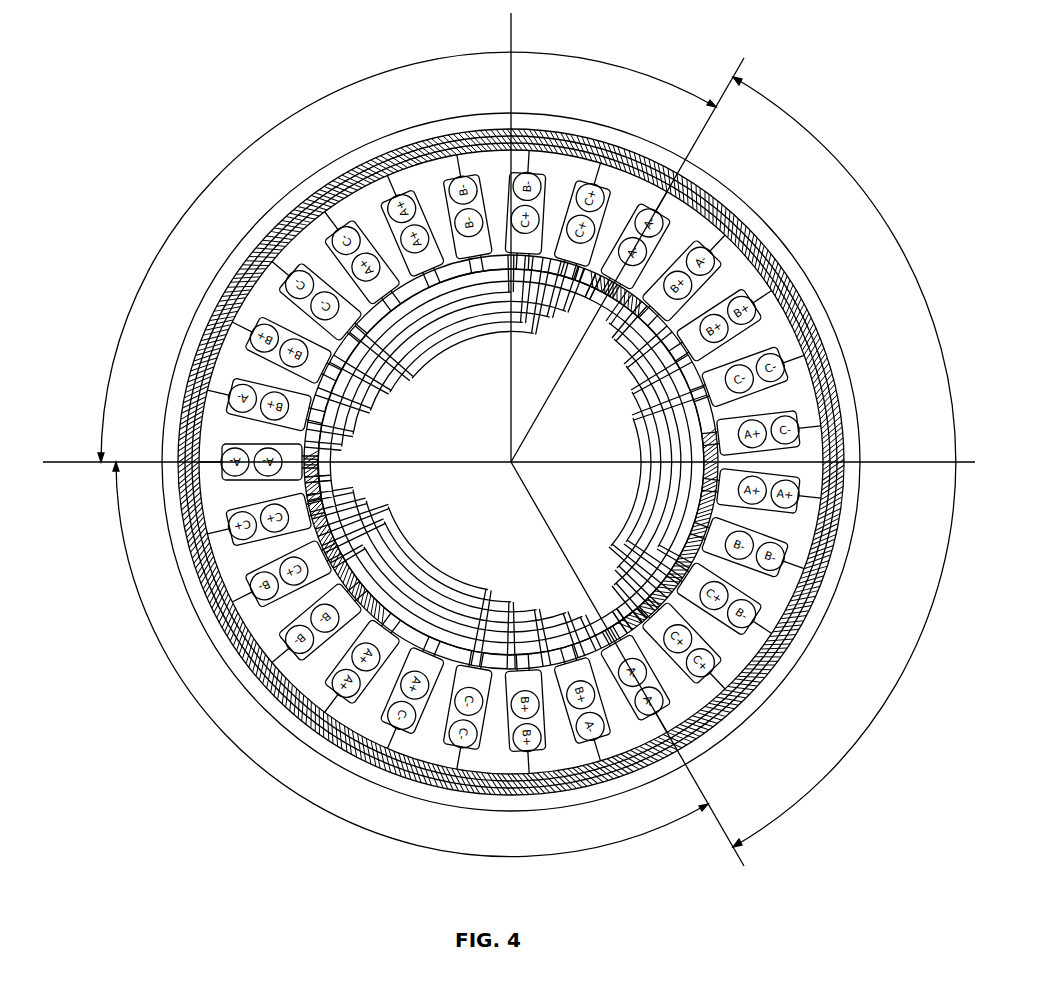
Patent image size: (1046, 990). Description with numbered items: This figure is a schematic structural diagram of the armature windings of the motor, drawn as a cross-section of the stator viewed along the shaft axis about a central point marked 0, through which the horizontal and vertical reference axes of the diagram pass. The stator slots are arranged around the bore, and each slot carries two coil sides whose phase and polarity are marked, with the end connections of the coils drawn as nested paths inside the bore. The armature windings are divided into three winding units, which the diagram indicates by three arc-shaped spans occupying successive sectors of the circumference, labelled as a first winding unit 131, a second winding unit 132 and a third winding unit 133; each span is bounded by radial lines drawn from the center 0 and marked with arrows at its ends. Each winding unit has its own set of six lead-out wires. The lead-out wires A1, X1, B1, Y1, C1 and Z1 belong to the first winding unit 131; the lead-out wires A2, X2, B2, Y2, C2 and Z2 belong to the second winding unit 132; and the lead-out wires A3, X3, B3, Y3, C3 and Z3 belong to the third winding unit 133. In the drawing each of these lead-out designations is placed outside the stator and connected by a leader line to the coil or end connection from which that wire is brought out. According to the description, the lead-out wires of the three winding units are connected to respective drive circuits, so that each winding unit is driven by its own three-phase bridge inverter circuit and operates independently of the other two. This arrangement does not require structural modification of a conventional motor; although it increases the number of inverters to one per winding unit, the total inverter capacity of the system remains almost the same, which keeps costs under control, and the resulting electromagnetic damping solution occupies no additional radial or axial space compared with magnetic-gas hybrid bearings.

The first winding section 131 is at (844, 462).
The second winding section 132 is at (407, 257).
The third winding section 133 is at (410, 659).
The center 0 is at (509, 253).
The lead-out wire A1 is at (725, 507).
The lead-out wire B1 is at (710, 340).
The lead-out wire C1 is at (697, 705).
The lead-out wire X1 is at (632, 298).
The lead-out wire Y1 is at (760, 553).
The lead-out wire Z1 is at (700, 402).
The lead-out wire A2 is at (455, 225).
The lead-out wire B2 is at (417, 383).
The lead-out wire C2 is at (583, 292).
The lead-out wire X2 is at (240, 442).
The lead-out wire Y2 is at (462, 195).
The lead-out wire Z2 is at (423, 363).
The lead-out wire A3 is at (430, 640).
The lead-out wire B3 is at (500, 703).
The lead-out wire C3 is at (235, 498).
The lead-out wire X3 is at (628, 700).
The lead-out wire Y3 is at (395, 612).
The lead-out wire Z3 is at (437, 693).